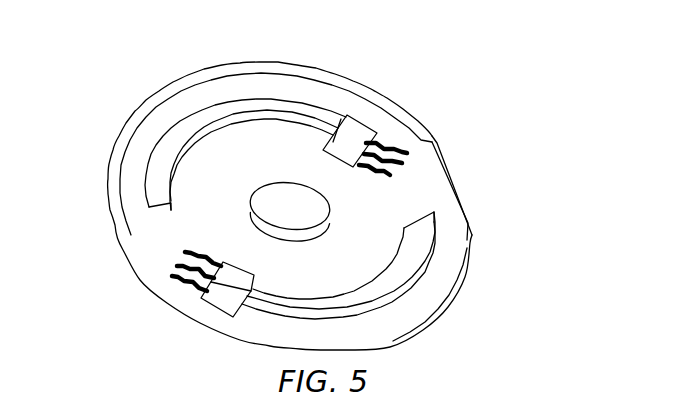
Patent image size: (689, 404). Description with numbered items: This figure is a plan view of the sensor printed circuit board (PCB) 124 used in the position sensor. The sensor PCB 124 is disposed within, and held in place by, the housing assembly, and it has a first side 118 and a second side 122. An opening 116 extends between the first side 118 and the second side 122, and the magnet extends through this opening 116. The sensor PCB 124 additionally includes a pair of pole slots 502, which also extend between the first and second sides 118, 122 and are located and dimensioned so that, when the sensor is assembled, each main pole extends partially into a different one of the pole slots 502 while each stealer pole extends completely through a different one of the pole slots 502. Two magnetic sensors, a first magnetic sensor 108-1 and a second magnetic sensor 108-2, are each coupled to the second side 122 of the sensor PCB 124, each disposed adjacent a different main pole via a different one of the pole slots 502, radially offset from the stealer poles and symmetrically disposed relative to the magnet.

The first side 118 is at (293, 67).
The sensor printed circuit board 124 is at (447, 183).
The second side 122 is at (315, 225).
The pole slots 502 is at (293, 113).
The first magnetic sensor 108-1 is at (222, 302).
The second magnetic sensor 108-2 is at (358, 137).
The opening 116 is at (290, 209).